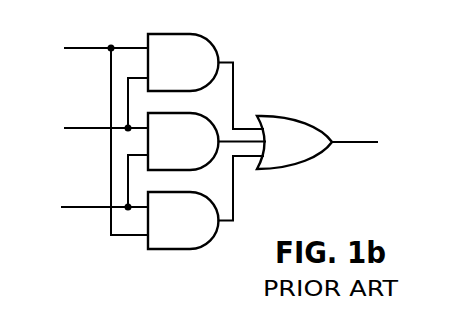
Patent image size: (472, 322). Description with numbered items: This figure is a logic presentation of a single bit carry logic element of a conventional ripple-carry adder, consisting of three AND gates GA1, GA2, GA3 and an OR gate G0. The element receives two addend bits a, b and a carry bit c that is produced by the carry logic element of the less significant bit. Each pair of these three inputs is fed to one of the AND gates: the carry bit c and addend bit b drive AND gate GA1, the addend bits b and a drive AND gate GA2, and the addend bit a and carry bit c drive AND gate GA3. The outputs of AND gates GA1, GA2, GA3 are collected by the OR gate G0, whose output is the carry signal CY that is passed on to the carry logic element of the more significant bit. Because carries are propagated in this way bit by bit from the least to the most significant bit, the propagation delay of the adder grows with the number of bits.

The AND gate GA1 is at (205, 81).
The AND gate GA2 is at (206, 141).
The AND gate GA3 is at (205, 202).
The OR gate G0 is at (294, 142).
The carry signal CY is at (374, 141).
The addend bit a is at (95, 186).
The addend bit b is at (95, 110).
The carry bit c is at (95, 132).